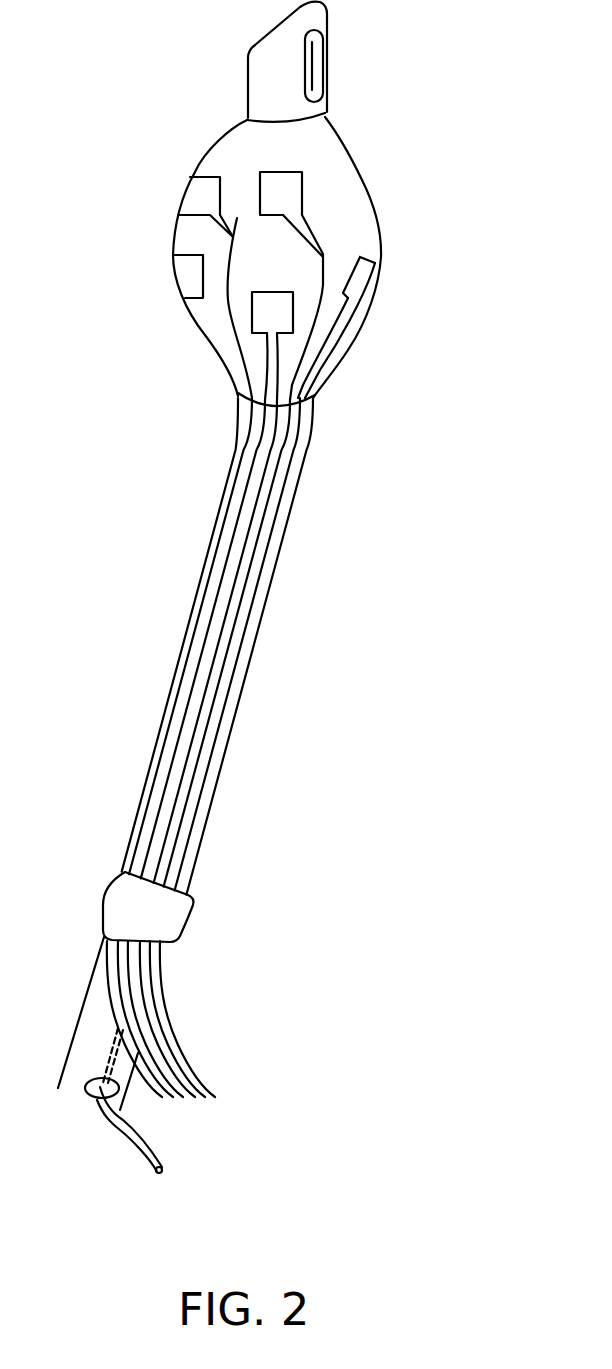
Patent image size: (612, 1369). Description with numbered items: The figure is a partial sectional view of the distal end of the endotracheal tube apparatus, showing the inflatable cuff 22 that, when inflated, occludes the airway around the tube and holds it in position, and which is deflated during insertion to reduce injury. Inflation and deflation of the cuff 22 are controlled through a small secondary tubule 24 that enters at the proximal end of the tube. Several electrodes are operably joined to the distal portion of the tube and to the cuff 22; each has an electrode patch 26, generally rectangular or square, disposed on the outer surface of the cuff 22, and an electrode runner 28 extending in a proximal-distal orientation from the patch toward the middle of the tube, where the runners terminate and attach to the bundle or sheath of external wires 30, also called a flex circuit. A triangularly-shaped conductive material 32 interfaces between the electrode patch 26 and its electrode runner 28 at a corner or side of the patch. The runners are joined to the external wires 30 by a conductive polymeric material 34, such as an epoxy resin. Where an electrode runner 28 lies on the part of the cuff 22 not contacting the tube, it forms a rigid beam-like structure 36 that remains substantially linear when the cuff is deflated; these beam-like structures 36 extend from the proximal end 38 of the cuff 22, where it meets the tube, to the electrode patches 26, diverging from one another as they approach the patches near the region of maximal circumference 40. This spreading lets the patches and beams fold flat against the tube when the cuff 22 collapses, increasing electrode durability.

The inflatable cuff 22 is at (148, 240).
The secondary tubule 24 is at (142, 1152).
The electrode patch 26 is at (287, 183).
The electrode runner 28 is at (283, 425).
The external wires 30 is at (198, 1110).
The triangularly-shaped conductive material 32 is at (340, 227).
The conductive polymeric material 34 is at (183, 938).
The beam-like structure 36 is at (310, 336).
The proximal end of the inflatable cuff 38 is at (311, 400).
The maximal circumference 40 is at (380, 249).